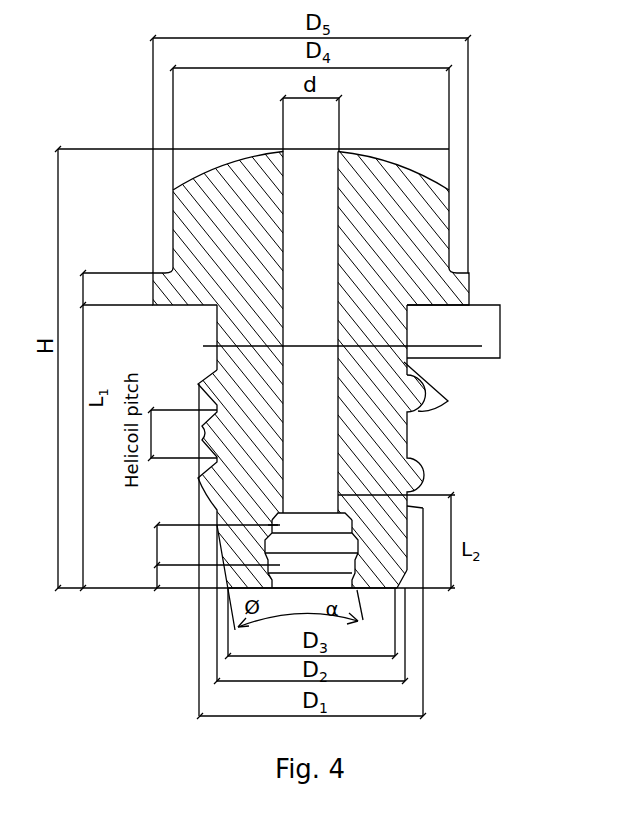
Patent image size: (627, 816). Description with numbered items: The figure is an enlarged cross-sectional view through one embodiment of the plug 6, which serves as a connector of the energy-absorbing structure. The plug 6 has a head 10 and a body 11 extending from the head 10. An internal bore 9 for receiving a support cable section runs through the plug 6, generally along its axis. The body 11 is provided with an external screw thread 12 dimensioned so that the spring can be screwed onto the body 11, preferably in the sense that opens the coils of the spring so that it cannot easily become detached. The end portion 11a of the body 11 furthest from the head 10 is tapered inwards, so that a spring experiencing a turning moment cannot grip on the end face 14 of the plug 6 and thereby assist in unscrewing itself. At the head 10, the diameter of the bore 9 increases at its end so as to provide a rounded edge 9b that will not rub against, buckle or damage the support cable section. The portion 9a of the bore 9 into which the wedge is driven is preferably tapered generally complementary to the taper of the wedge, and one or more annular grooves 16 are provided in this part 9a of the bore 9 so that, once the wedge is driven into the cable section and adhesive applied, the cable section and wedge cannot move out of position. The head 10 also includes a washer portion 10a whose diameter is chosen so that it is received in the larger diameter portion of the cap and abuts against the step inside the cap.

The plug 6 is at (506, 151).
The internal bore 9 is at (302, 173).
The portion of the bore 9a is at (327, 527).
The rounded edge 9b is at (353, 166).
The head 10 is at (455, 236).
The washer portion 10a is at (472, 290).
The body 11 is at (460, 428).
The end portion 11a is at (408, 577).
The external screw thread 12 is at (418, 460).
The end face 14 is at (383, 597).
The annular grooves 16 is at (300, 527).